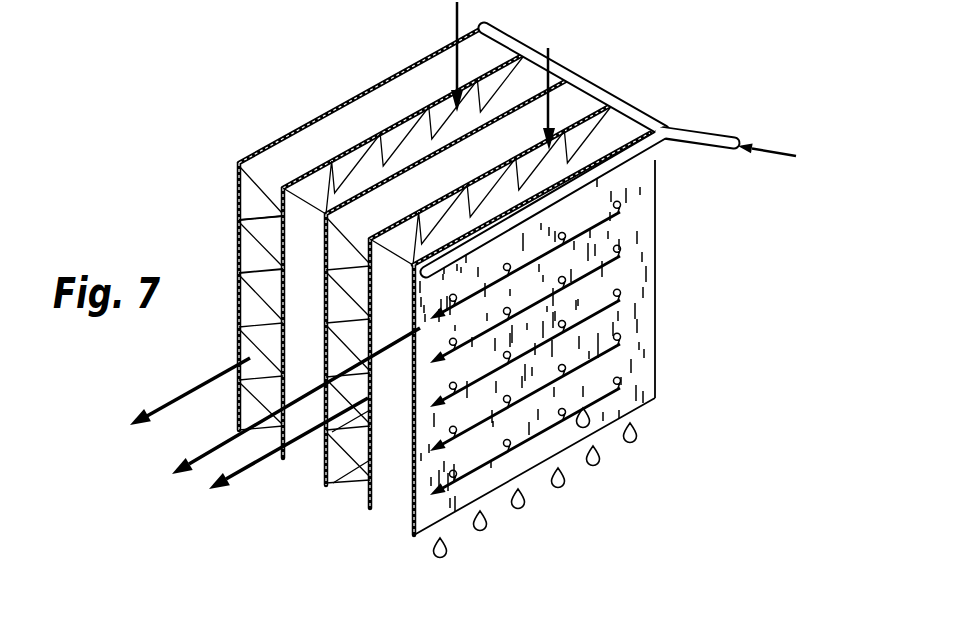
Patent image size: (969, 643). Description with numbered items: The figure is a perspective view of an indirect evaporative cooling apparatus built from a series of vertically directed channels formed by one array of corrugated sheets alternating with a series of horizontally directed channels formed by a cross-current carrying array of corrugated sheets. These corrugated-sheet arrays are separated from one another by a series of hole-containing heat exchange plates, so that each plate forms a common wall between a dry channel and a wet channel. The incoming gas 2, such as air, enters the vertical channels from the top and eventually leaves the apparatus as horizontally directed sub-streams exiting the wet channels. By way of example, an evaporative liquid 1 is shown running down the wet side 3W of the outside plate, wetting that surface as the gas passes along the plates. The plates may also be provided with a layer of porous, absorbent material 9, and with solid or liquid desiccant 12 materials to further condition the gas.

The evaporative liquid 1 is at (650, 512).
The incoming gas 2 is at (457, 8).
The wet side 3W is at (633, 320).
The porous absorbent material 9 is at (573, 80).
The desiccant 12 is at (400, 487).